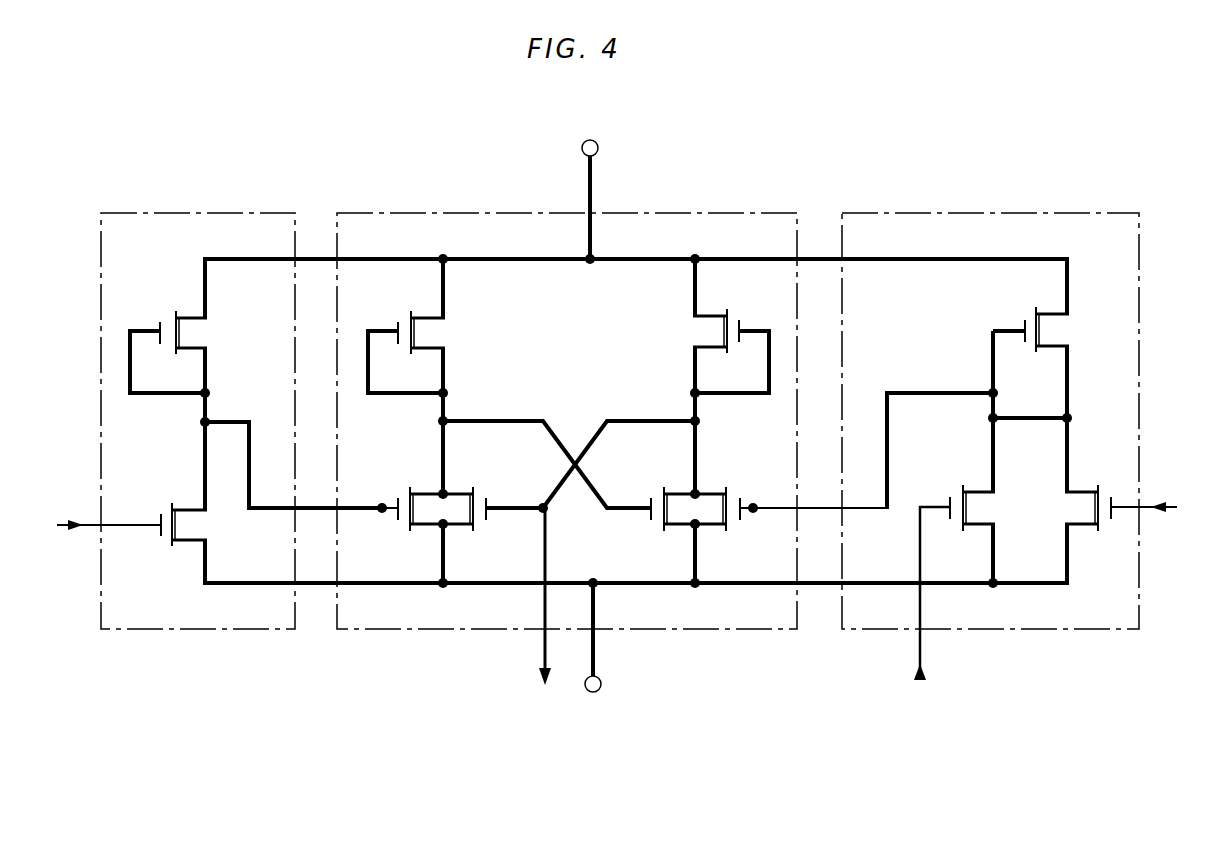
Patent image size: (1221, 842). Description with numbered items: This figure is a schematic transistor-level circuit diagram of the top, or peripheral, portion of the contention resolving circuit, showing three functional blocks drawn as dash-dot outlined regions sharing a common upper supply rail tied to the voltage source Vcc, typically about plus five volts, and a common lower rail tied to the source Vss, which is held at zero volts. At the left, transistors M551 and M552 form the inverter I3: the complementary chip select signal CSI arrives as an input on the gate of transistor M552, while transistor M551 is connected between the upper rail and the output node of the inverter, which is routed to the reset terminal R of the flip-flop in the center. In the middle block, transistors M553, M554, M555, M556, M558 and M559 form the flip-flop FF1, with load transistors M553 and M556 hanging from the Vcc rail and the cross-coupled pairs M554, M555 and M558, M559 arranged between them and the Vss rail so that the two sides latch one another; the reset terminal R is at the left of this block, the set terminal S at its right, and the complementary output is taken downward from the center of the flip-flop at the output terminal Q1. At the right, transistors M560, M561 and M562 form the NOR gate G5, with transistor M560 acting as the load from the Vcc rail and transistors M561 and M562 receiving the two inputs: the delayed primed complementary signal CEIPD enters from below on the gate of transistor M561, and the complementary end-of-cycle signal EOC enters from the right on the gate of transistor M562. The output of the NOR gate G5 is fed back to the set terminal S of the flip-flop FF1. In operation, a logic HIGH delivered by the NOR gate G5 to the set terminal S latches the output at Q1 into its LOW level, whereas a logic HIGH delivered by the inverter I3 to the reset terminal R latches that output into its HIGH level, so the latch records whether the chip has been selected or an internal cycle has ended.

The inverter I3 is at (165, 212).
The flip-flop FF1 is at (428, 212).
The NOR gate G5 is at (913, 212).
The transistor M551 is at (168, 341).
The transistor M552 is at (177, 513).
The transistor M553 is at (406, 341).
The transistor M554 is at (416, 498).
The transistor M555 is at (475, 498).
The transistor M556 is at (731, 341).
The transistor M558 is at (667, 498).
The transistor M559 is at (725, 498).
The transistor M560 is at (1031, 320).
The transistor M561 is at (967, 497).
The transistor M562 is at (1098, 497).
The complementary chip select signal CSI is at (95, 527).
The reset terminal R is at (388, 497).
The set terminal S is at (814, 497).
The output terminal Q1 is at (558, 694).
The voltage source Vcc is at (604, 151).
The voltage source Vss is at (608, 686).
The first delayed primed complementary signal CEIPD is at (950, 692).
The complementary end-of-cycle signal EOC is at (1212, 497).